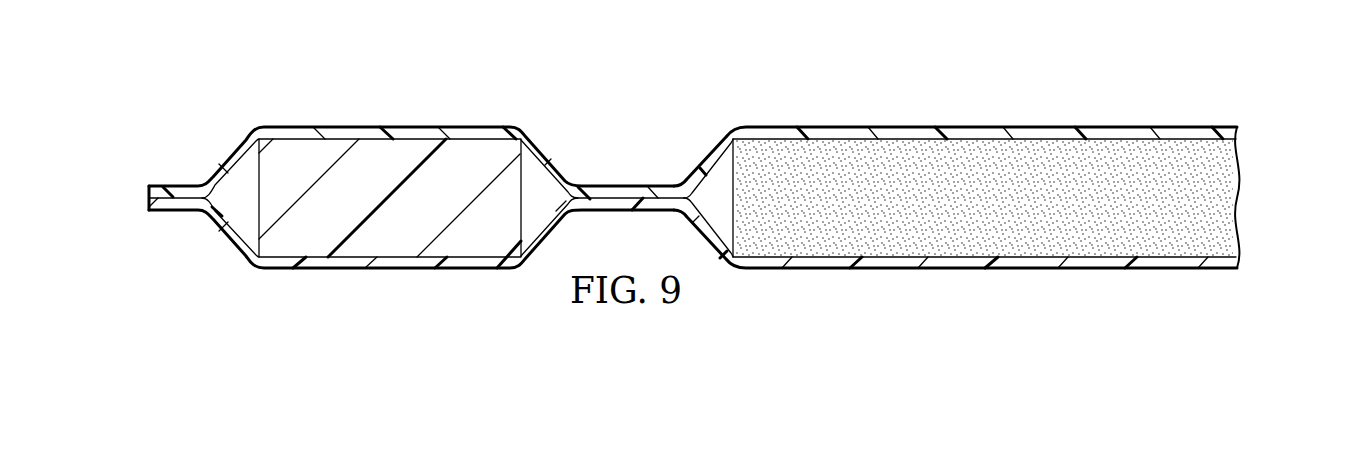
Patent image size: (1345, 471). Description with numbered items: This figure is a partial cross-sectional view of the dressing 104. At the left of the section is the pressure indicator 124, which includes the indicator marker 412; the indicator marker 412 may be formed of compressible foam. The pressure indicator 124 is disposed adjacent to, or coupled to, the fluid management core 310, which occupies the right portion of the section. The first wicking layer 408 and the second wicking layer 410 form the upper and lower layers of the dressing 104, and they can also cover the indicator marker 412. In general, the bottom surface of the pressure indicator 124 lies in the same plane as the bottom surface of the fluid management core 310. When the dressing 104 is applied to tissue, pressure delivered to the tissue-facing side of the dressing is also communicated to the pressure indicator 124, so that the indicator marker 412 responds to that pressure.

The pressure indicator 124 is at (344, 107).
The indicator marker 412 is at (413, 148).
The dressing 104 is at (996, 165).
The first wicking layer 408 is at (1109, 127).
The second wicking layer 410 is at (1090, 270).
The fluid management core 310 is at (1248, 195).